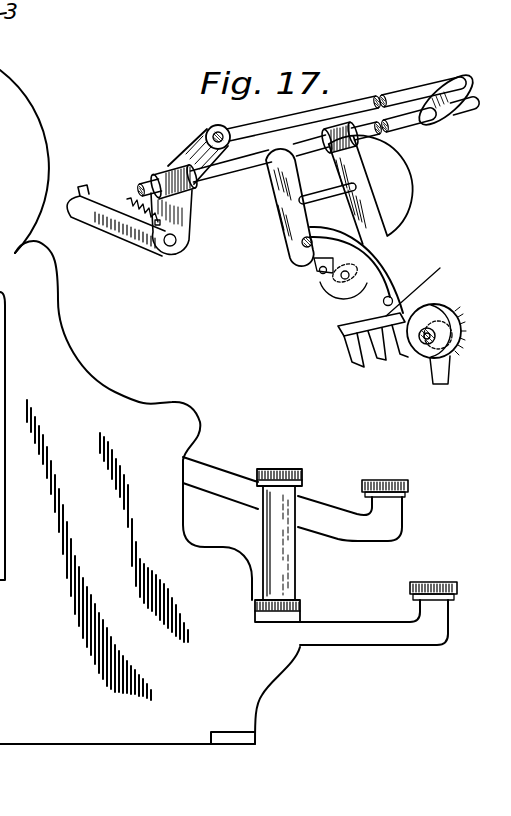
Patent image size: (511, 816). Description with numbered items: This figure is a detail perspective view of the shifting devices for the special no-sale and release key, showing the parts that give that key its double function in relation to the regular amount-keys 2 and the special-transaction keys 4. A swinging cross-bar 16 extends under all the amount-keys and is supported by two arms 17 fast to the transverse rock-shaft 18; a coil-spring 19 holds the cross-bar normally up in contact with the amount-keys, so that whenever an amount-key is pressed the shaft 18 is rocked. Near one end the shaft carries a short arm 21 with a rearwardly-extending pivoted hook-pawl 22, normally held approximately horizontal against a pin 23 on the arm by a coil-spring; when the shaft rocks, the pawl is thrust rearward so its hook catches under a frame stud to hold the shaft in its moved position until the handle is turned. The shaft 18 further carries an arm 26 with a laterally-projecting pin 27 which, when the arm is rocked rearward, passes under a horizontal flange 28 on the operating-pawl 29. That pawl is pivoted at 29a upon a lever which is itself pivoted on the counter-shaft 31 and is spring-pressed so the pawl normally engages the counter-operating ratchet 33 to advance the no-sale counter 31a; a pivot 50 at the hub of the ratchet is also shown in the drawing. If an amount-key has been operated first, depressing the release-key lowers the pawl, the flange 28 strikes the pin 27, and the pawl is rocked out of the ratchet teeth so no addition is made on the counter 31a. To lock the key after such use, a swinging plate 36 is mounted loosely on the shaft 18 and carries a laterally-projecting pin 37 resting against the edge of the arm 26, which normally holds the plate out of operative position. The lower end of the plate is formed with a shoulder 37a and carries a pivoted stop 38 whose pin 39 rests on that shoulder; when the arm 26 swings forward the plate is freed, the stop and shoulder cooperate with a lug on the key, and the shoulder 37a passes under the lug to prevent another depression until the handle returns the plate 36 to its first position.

The regular amount-keys 2 is at (307, 504).
The special-transaction keys 4 is at (340, 623).
The rod 16 is at (237, 126).
The arms 17 is at (200, 150).
The transverse rock-shaft 18 is at (404, 131).
The coil-spring 19 is at (221, 125).
The short arm 21 is at (190, 210).
The hook-pawl 22 is at (143, 242).
The pin 23 is at (133, 201).
The arm 26 is at (274, 183).
The laterally-projecting pin 27 is at (469, 98).
The horizontal flange 28 is at (292, 218).
The operating-pawl 29 is at (336, 330).
The pivot 29a is at (429, 284).
The counter-shaft 31 is at (430, 343).
The no-sale counter 31a is at (451, 318).
The counter-operating ratchet 33 is at (459, 333).
The swinging plate 36 is at (378, 236).
The laterally-projecting pin 37 is at (355, 187).
The shoulder 37a is at (336, 288).
The pivoted stop 38 is at (316, 268).
The pin 39 is at (321, 274).
The pivot 50 is at (409, 326).